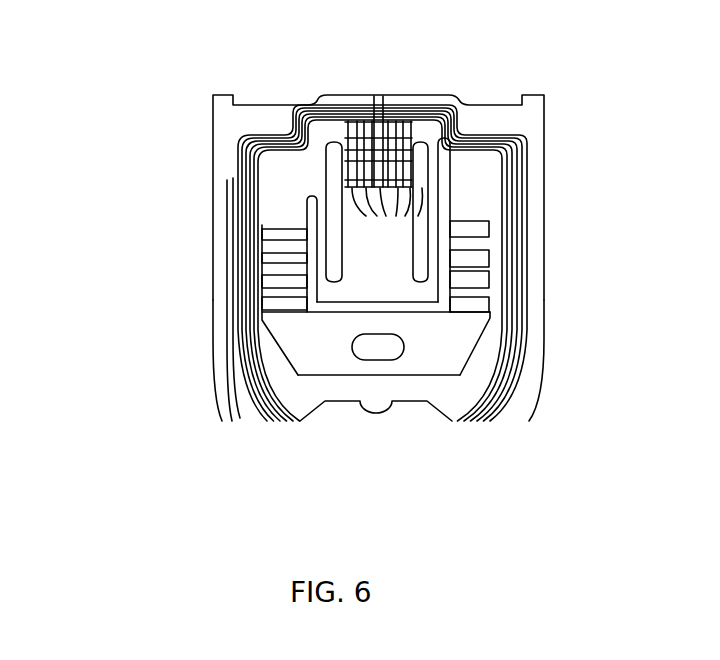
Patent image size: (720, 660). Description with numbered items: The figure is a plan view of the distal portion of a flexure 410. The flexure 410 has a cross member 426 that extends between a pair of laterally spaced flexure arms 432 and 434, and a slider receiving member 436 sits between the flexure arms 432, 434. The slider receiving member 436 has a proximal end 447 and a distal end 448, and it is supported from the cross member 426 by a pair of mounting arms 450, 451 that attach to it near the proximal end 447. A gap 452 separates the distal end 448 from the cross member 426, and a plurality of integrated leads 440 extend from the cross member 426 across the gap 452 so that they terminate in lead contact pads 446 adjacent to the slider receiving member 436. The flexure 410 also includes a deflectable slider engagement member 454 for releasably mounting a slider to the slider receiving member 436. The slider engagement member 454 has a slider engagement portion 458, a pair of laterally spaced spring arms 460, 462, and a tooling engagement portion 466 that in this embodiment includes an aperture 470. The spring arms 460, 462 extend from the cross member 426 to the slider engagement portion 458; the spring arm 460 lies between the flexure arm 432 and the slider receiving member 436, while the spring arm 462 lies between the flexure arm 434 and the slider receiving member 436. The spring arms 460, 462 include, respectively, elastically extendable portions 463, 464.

The flexure 410 is at (137, 70).
The cross member 426 is at (467, 106).
The flexure arm 432 is at (546, 233).
The flexure arm 434 is at (212, 253).
The slider receiving member 436 is at (398, 279).
The integrated leads 440 is at (237, 137).
The lead contact pads 446 is at (387, 217).
The proximal end 447 is at (407, 290).
The distal end 448 is at (440, 193).
The mounting arm 450 is at (447, 253).
The mounting arm 451 is at (318, 233).
The gap 452 is at (328, 152).
The slider engagement member 454 is at (465, 371).
The slider engagement portion 458 is at (333, 325).
The spring arm 460 is at (490, 305).
The spring arm 462 is at (262, 298).
The elastically extendable portion 463 is at (447, 272).
The elastically extendable portion 464 is at (262, 260).
The tooling engagement portion 466 is at (363, 369).
The aperture 470 is at (407, 345).